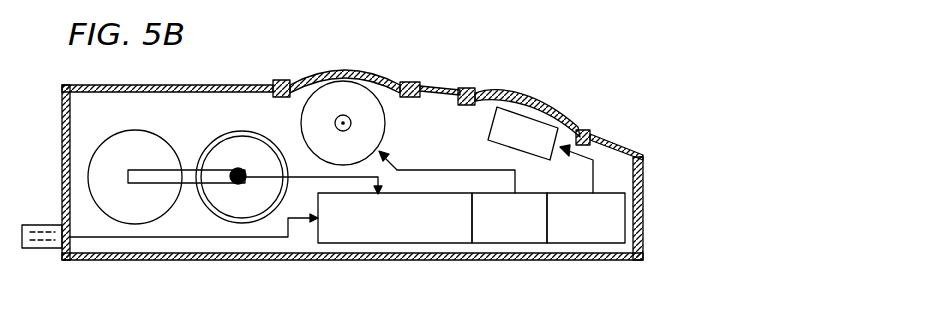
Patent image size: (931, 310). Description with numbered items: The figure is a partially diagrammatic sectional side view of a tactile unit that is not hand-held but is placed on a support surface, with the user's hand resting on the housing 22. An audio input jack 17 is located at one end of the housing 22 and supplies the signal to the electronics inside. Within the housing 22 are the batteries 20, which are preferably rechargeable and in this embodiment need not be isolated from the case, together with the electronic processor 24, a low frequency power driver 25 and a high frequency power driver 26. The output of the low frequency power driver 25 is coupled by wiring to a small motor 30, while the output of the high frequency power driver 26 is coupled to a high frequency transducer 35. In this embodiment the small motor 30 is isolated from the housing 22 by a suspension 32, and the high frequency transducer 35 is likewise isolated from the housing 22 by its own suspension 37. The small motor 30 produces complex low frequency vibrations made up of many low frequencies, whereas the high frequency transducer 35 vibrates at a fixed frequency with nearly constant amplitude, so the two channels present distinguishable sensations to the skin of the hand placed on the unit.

The audio input jack 17 is at (43, 223).
The batteries 20 is at (150, 129).
The housing 22 is at (645, 197).
The electronic processor 24 is at (432, 193).
The low frequency power driver 25 is at (508, 245).
The high frequency power driver 26 is at (588, 245).
The small motor 30 is at (378, 131).
The suspension 32 is at (385, 77).
The high frequency transducer 35 is at (533, 140).
The suspension gasket 37 is at (570, 117).